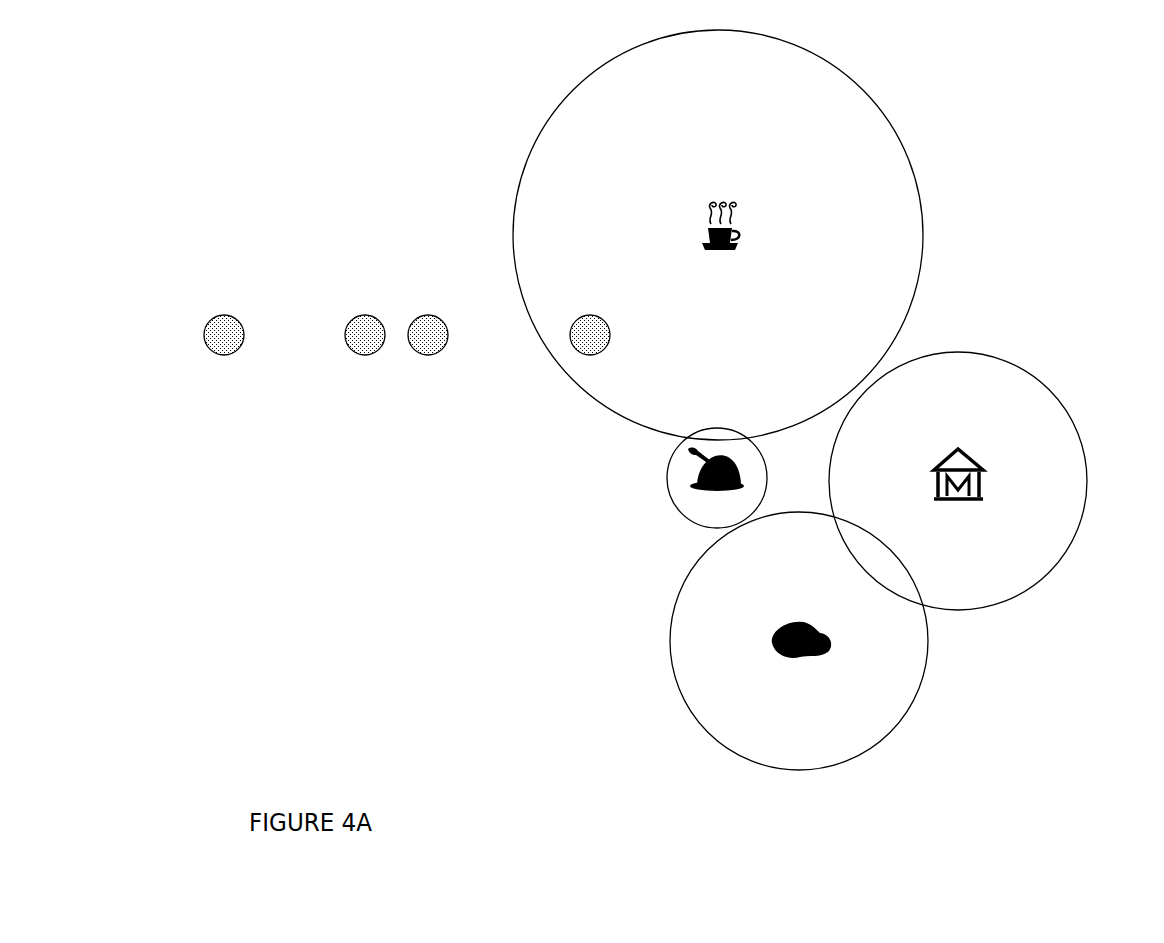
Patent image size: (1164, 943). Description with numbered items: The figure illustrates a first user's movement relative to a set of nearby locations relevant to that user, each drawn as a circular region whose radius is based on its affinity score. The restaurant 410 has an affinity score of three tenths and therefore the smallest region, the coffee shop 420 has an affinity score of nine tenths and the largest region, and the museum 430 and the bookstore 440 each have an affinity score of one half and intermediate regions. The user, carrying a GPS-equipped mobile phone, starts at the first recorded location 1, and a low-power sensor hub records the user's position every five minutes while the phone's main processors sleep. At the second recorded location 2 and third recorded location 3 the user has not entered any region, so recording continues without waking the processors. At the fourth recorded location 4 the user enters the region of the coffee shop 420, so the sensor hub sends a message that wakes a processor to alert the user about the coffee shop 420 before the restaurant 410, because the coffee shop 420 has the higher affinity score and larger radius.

The first recorded location 1 is at (224, 335).
The second recorded location 2 is at (365, 335).
The third recorded location 3 is at (428, 335).
The fourth recorded location 4 is at (590, 335).
The restaurant 410 is at (657, 551).
The coffee shop 420 is at (947, 120).
The museum 430 is at (1122, 608).
The bookstore 440 is at (978, 732).